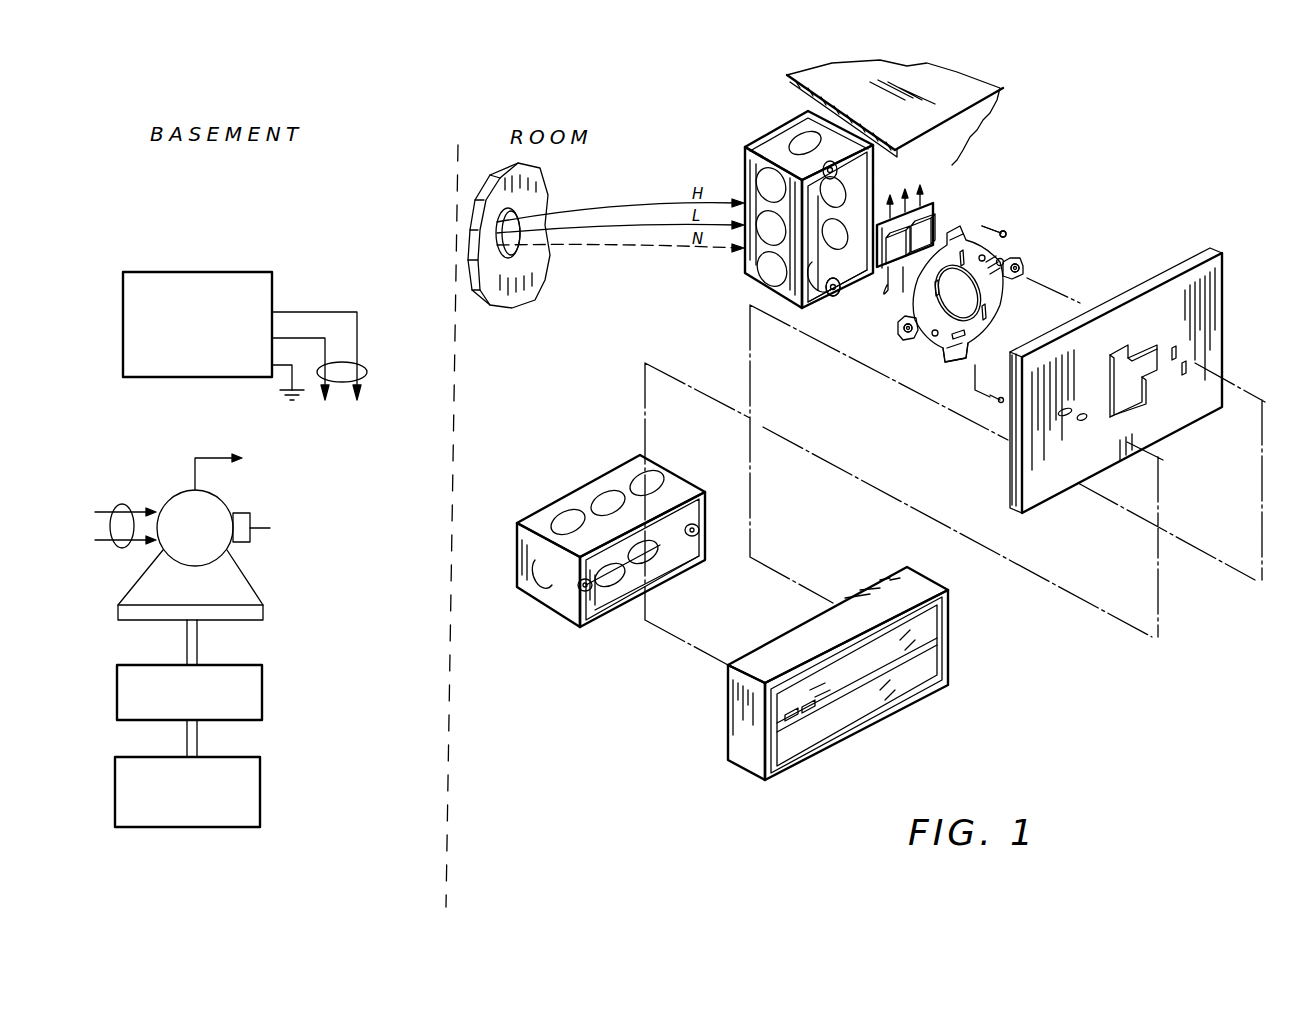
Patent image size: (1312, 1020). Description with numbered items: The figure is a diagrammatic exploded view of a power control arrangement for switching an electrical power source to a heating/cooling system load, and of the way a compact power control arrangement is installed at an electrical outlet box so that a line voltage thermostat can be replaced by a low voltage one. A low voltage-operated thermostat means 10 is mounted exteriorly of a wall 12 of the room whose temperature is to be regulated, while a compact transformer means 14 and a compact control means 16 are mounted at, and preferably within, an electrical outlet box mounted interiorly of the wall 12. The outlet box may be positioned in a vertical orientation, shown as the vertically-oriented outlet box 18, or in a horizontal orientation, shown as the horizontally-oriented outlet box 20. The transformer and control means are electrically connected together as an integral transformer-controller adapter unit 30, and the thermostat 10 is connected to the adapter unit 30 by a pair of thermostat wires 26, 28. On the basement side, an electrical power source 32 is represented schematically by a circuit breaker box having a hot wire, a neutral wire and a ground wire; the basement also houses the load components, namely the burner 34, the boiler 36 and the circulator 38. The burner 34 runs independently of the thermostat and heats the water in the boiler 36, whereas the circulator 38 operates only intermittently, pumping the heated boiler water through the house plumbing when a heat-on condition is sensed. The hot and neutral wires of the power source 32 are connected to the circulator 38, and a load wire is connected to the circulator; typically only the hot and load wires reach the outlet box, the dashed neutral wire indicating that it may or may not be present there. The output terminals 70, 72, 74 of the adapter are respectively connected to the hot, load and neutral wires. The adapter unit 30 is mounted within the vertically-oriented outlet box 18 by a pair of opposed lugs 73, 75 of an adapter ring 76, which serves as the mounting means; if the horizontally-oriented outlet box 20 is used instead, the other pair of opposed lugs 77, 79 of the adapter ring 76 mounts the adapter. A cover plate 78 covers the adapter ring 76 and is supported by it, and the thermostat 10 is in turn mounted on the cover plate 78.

The low voltage-operated thermostat means 10 is at (730, 763).
The wall 12 is at (968, 125).
The compact transformer means 14 is at (938, 223).
The compact control means 16 is at (873, 292).
The vertically-oriented outlet box 18 is at (742, 164).
The horizontally-oriented outlet box 20 is at (555, 508).
The thermostat wire 26 is at (835, 289).
The thermostat wire 28 is at (899, 290).
The transformer-controller adapter unit 30 is at (938, 199).
The electrical power source 32 is at (157, 272).
The burner 34 is at (260, 785).
The boiler 36 is at (263, 692).
The circulator 38 is at (247, 610).
The output terminal 70 is at (887, 189).
The output terminal 72 is at (909, 182).
The output terminal 74 is at (929, 179).
The lug 73 is at (987, 231).
The lug 75 is at (962, 352).
The adapter ring 76 is at (1003, 259).
The lug 77 is at (1023, 268).
The cover plate 78 is at (1218, 274).
The lug 79 is at (913, 338).